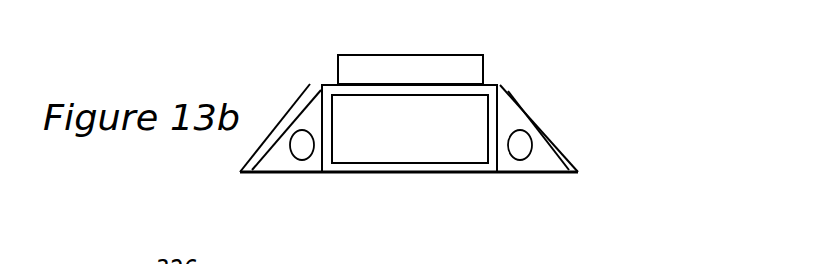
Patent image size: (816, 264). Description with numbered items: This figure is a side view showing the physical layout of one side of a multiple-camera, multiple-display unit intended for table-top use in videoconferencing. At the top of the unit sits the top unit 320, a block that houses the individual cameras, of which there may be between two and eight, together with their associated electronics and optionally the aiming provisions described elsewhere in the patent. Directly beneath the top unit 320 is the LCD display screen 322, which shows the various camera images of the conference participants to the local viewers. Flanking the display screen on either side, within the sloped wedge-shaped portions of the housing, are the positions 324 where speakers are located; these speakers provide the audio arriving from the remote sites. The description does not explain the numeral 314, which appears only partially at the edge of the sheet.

The keypad 314 is at (145, 5).
The top unit 320 is at (414, 55).
The LCD display screen 322 is at (411, 100).
The speaker positions 324 is at (517, 160).